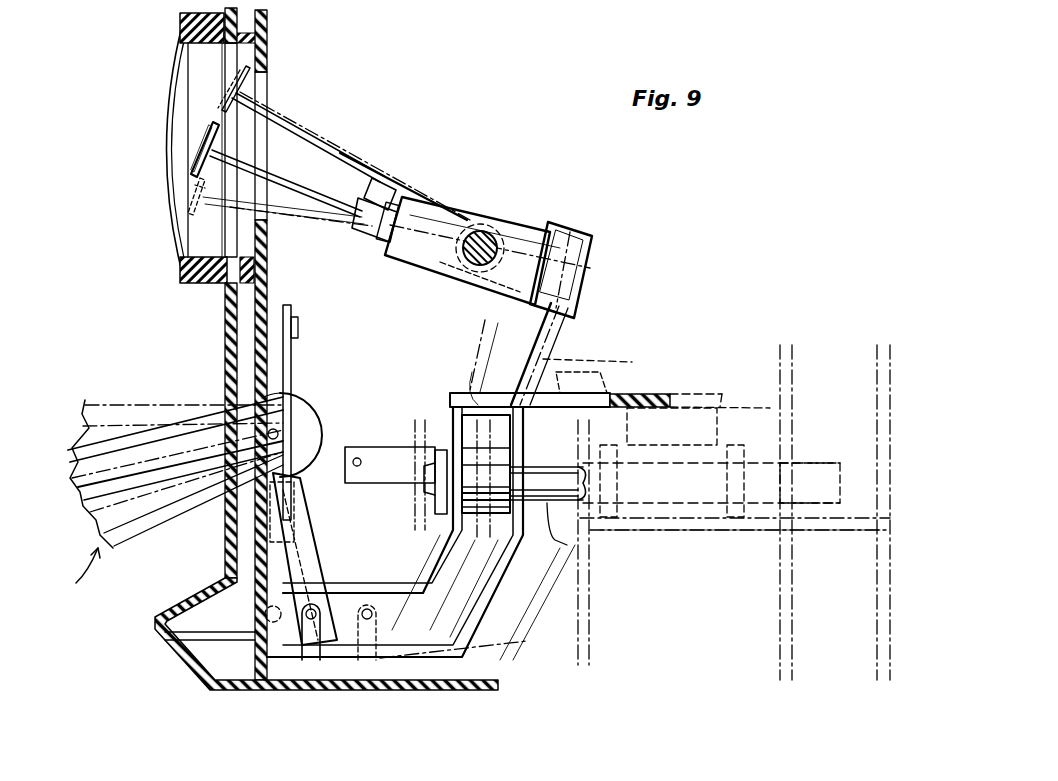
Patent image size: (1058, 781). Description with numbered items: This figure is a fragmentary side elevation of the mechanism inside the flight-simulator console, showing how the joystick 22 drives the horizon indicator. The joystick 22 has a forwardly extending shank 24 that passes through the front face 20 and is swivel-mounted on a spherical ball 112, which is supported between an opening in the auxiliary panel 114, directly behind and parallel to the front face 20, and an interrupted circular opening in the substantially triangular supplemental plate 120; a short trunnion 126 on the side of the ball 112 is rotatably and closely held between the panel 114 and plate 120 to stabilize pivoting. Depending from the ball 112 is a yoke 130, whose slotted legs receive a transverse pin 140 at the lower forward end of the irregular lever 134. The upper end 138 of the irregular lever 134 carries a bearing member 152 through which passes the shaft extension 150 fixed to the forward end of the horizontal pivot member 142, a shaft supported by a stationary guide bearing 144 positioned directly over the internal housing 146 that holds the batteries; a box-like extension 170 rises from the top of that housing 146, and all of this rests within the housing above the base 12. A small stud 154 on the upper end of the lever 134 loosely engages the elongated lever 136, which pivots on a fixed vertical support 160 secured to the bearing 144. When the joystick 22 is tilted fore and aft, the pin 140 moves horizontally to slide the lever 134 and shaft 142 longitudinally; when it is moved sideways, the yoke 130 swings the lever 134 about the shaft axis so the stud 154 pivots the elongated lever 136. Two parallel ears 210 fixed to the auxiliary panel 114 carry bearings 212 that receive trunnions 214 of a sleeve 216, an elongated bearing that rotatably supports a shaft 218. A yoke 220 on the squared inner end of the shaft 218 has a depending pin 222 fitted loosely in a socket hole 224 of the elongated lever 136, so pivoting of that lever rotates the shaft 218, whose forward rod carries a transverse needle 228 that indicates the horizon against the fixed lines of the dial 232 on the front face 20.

The base 12 is at (180, 652).
The front face 20 is at (226, 339).
The joystick 22 is at (72, 566).
The shank 24 is at (112, 445).
The spherical ball 112 is at (298, 400).
The auxiliary panel 114 is at (242, 301).
The supplemental plate 120 is at (295, 368).
The trunnion 126 is at (270, 430).
The yoke 130 is at (320, 548).
The irregular lever 134 is at (493, 606).
The elongated lever 136 is at (660, 393).
The upper end of irregular lever 138 is at (450, 415).
The transverse pin 140 is at (312, 640).
The horizontal pivot member 142 is at (567, 546).
The guide bearing 144 is at (687, 518).
The internal housing 146 is at (767, 532).
The shaft extension 150 is at (493, 470).
The bearing member 152 is at (456, 440).
The stud 154 is at (483, 392).
The fixed vertical support 160 is at (718, 428).
The box-like extension 170 is at (792, 375).
The ears 210 is at (360, 156).
The bearings 212 is at (480, 230).
The trunnions 214 is at (500, 240).
The sleeve 216 is at (440, 200).
The shaft 218 is at (394, 180).
The yoke 220 is at (573, 236).
The depending pin 222 is at (548, 348).
The socket hole 224 is at (608, 371).
The mirror 228 is at (256, 82).
The dial 232 is at (165, 150).